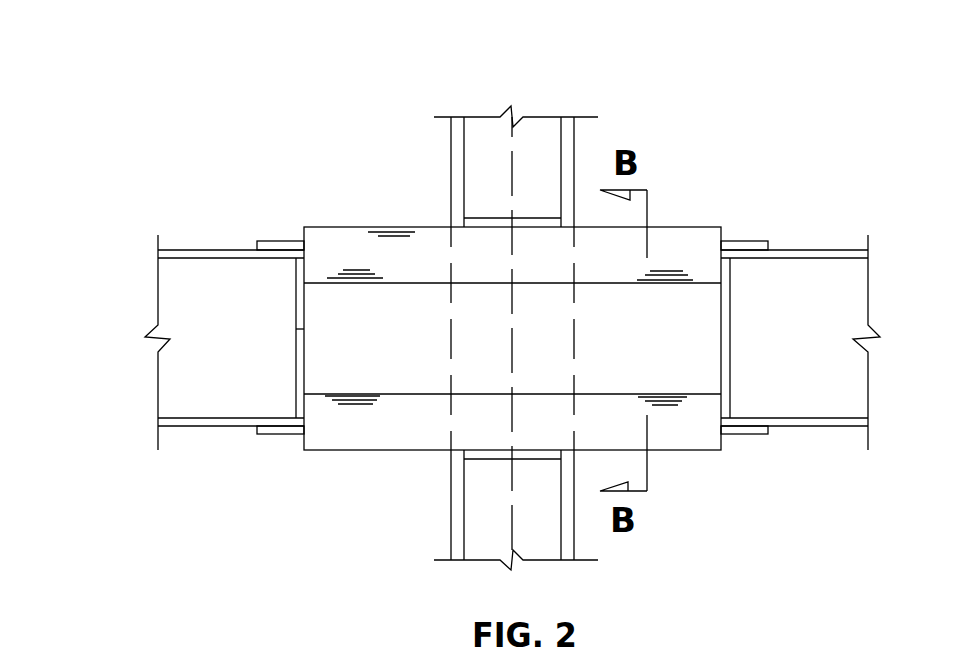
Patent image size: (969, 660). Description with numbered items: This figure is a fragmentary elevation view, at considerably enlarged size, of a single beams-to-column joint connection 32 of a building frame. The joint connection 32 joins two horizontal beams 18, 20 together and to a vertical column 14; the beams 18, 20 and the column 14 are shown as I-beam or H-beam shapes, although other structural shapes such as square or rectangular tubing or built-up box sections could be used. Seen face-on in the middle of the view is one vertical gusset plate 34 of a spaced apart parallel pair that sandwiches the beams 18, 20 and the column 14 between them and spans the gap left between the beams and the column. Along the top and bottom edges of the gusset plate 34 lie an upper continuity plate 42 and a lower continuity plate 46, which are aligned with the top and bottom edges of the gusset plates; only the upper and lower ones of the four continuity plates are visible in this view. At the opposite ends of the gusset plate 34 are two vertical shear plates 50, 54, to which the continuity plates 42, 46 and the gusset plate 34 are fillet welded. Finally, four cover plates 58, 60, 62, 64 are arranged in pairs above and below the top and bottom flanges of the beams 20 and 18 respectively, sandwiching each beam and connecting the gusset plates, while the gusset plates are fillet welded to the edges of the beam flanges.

The joint connection 32 is at (320, 117).
The column 14 is at (540, 148).
The beam 18 is at (173, 287).
The beam 20 is at (808, 278).
The gusset plate 34 is at (662, 245).
The continuity plate 42 is at (488, 217).
The continuity plate 46 is at (492, 460).
The shear plate 50 is at (725, 382).
The shear plate 54 is at (304, 329).
The cover plate 58 is at (747, 243).
The cover plate 60 is at (743, 433).
The cover plate 62 is at (273, 247).
The cover plate 64 is at (270, 437).